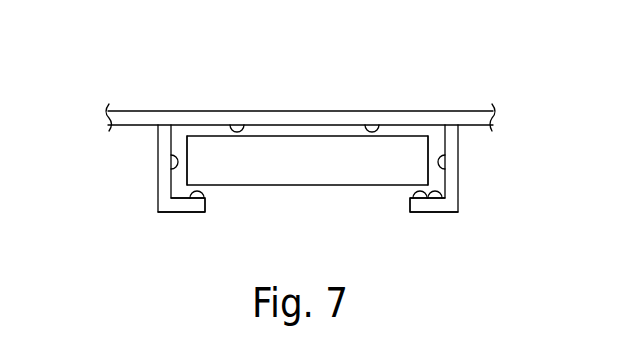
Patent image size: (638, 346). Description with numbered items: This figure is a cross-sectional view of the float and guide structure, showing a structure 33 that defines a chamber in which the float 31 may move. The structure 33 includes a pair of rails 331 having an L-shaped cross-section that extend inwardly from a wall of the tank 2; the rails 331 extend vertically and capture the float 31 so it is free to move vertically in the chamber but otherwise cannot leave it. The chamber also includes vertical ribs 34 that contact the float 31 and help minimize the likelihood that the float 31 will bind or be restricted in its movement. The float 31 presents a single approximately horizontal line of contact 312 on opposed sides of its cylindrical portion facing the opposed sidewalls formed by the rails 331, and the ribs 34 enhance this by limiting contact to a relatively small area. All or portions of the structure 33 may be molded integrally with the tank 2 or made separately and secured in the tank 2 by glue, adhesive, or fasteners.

The tank 2 is at (131, 111).
The float 31 is at (367, 184).
The horizontal line of contact 312 is at (186, 141).
The structure 33 is at (155, 220).
The rails 331 is at (184, 206).
The vertical ribs 34 is at (362, 130).